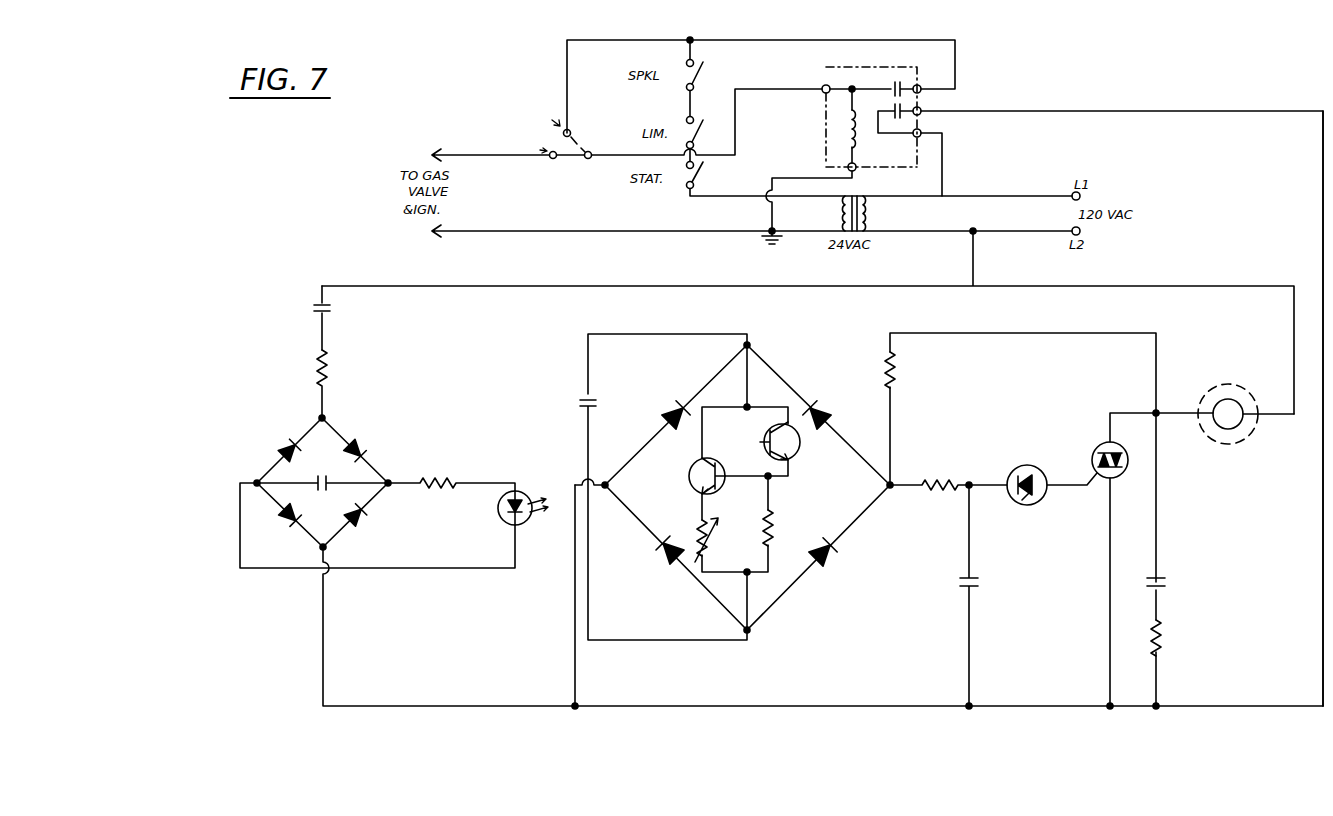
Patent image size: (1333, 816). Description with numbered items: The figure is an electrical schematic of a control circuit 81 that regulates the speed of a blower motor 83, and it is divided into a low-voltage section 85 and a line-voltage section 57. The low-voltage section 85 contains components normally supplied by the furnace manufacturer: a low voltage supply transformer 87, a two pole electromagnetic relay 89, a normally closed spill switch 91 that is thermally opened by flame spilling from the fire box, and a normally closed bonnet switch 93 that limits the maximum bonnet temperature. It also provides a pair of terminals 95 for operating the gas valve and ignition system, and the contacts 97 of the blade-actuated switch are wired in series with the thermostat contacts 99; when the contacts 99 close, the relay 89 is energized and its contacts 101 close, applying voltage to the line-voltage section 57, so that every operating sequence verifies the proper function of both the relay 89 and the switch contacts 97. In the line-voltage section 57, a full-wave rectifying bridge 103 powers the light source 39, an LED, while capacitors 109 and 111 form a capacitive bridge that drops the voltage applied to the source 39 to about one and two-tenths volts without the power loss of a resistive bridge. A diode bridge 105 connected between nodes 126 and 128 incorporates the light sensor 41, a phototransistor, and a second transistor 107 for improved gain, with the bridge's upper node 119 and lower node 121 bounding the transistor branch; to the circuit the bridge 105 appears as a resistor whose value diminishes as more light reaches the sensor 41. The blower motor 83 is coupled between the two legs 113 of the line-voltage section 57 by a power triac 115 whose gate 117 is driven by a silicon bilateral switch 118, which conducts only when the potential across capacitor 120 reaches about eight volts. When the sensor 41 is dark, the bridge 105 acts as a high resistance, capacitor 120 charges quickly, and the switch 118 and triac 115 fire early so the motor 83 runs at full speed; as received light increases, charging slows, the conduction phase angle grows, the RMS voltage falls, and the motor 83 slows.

The pair of terminals 95 is at (423, 162).
The contacts of the switch 97 is at (550, 136).
The spill switch 91 is at (688, 80).
The bonnet switch 93 is at (688, 128).
The thermostat contacts 99 is at (687, 180).
The low-voltage section 85 is at (775, 70).
The two pole electromagnetic relay 89 is at (826, 125).
The relay contacts 101 is at (905, 95).
The low voltage supply transformer 87 is at (873, 208).
The control circuit 81 is at (548, 272).
The capacitor 109 is at (343, 306).
The full-wave rectifying bridge 103 is at (347, 428).
The capacitor 111 is at (322, 491).
The light source 39 is at (523, 481).
The line-voltage section 57 is at (857, 330).
The bridge positive node 119 is at (757, 348).
The second transistor 107 is at (689, 480).
The light sensor 41 is at (800, 452).
The diode bridge 105 is at (870, 536).
The bridge negative node 121 is at (760, 637).
The node 128 is at (580, 702).
The node 126 is at (893, 483).
The silicon bilateral switch 118 is at (1018, 505).
The triac gate 117 is at (1090, 492).
The power triac 115 is at (1122, 478).
The capacitor 120 is at (956, 582).
The legs of the line-voltage section 113 is at (1305, 300).
The blower motor 83 is at (1237, 427).